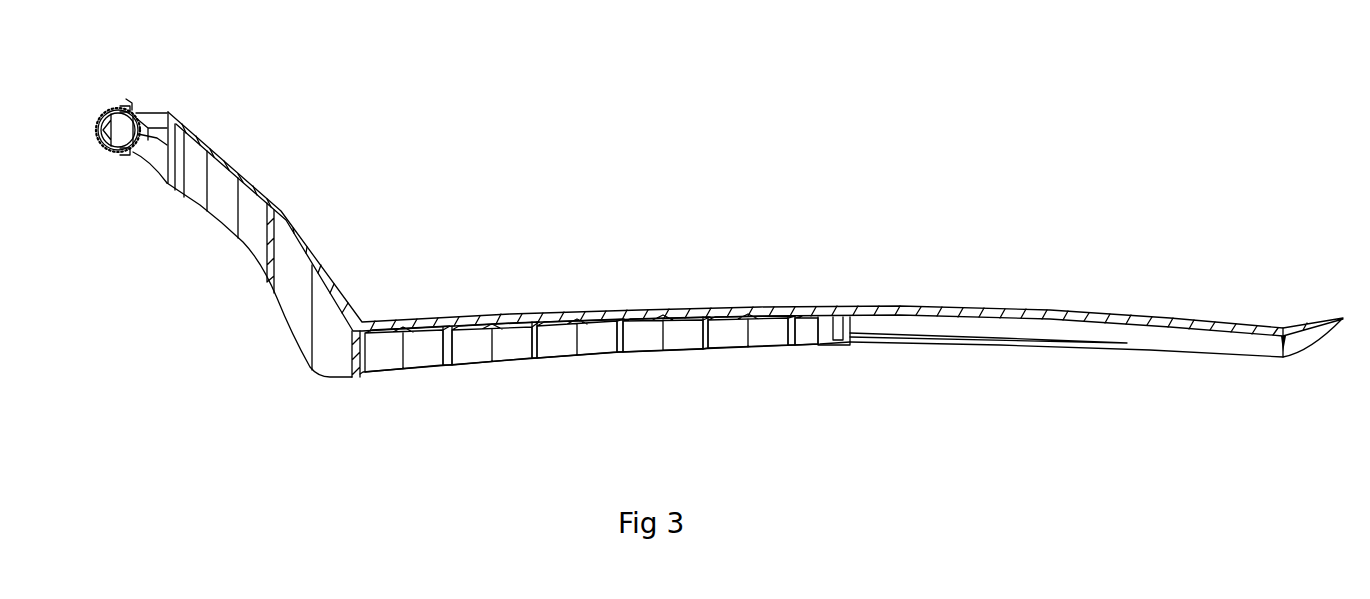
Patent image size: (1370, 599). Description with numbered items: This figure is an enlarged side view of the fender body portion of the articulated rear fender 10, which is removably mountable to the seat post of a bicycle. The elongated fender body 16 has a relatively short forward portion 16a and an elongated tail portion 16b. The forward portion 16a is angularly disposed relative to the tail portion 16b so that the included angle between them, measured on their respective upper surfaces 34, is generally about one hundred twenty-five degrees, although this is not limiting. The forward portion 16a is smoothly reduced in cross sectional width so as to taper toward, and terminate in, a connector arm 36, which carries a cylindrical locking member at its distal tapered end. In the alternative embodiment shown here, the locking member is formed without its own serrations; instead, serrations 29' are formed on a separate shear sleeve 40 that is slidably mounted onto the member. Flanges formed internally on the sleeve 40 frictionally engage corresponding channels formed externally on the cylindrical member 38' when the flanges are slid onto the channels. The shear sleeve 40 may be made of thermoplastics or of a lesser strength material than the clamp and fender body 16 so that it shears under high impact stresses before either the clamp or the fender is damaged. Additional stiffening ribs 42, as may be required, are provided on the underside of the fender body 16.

The articulated rear fender 10 is at (977, 299).
The fender body 16 is at (705, 304).
The forward portion 16a is at (228, 158).
The tail portion 16b is at (1257, 323).
The serrations 29' is at (153, 73).
The upper surfaces 34 is at (282, 212).
The connector arm 36 is at (153, 113).
The cylindrical member 38' is at (138, 190).
The shear sleeve 40 is at (108, 100).
The stiffening ribs 42 is at (452, 348).